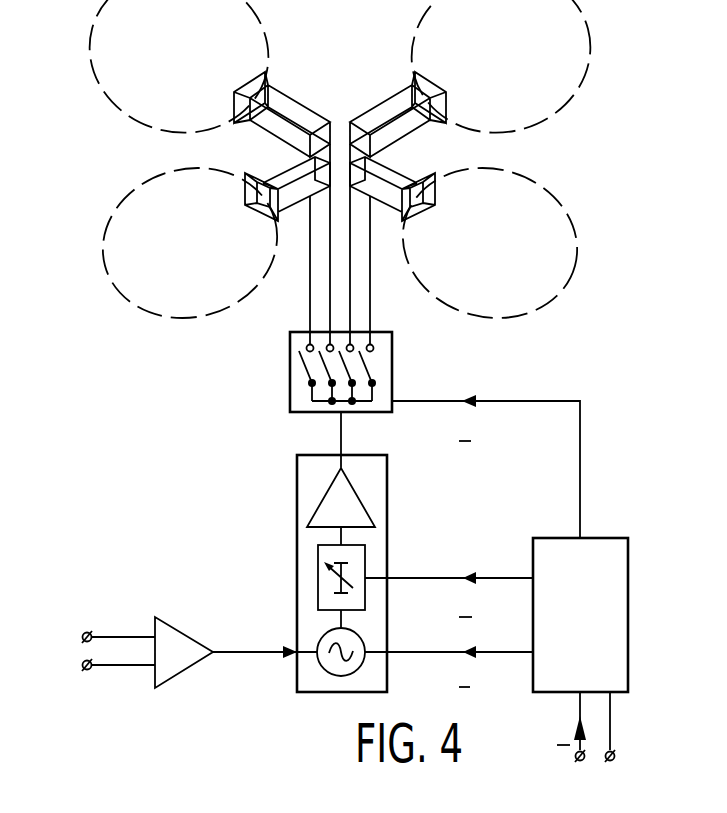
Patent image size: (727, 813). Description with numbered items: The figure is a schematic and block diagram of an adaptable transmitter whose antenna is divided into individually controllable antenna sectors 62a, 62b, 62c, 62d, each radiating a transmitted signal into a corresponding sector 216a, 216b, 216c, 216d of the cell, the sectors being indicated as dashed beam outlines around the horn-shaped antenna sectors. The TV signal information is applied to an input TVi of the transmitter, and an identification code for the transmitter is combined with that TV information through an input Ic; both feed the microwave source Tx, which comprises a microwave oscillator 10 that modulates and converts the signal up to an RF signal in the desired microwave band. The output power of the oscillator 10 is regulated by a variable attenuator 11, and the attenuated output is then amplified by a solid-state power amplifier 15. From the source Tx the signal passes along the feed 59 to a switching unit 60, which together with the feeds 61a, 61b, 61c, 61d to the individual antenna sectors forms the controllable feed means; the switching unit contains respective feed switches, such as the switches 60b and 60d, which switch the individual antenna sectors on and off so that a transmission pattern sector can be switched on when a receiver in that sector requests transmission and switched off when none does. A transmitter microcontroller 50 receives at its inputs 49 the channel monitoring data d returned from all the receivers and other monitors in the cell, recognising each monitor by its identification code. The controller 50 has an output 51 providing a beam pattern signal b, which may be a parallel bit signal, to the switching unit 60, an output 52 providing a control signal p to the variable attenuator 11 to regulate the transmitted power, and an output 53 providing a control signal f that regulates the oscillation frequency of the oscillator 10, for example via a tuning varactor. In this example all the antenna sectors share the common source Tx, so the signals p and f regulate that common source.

The cell sector 216a is at (100, 72).
The cell sector 216b is at (566, 75).
The cell sector 216c is at (550, 212).
The cell sector 216d is at (110, 242).
The antenna sector 62a is at (247, 85).
The antenna sector 62b is at (415, 97).
The antenna sector 62c is at (418, 212).
The antenna sector 62d is at (253, 213).
The feed switch 61a is at (330, 316).
The feed switch 61b is at (372, 316).
The feed switch 61c is at (352, 288).
The feed switch 61d is at (310, 278).
The switching unit 60 is at (337, 391).
The feed switch 60b is at (372, 367).
The feed switch 60d is at (303, 366).
The controllable feed means 59 is at (337, 426).
The controller output 51 is at (578, 396).
The controller output 52 is at (498, 578).
The controller output 53 is at (500, 652).
The transmitter microcontroller 50 is at (630, 603).
The controller input 49 is at (585, 713).
The solid-state power amplifier 15 is at (312, 512).
The variable attenuator 11 is at (318, 568).
The microwave oscillator 10 is at (322, 668).
The microwave source Tx is at (296, 483).
The TV signal input TVi is at (103, 625).
The identification code input Ic is at (104, 676).